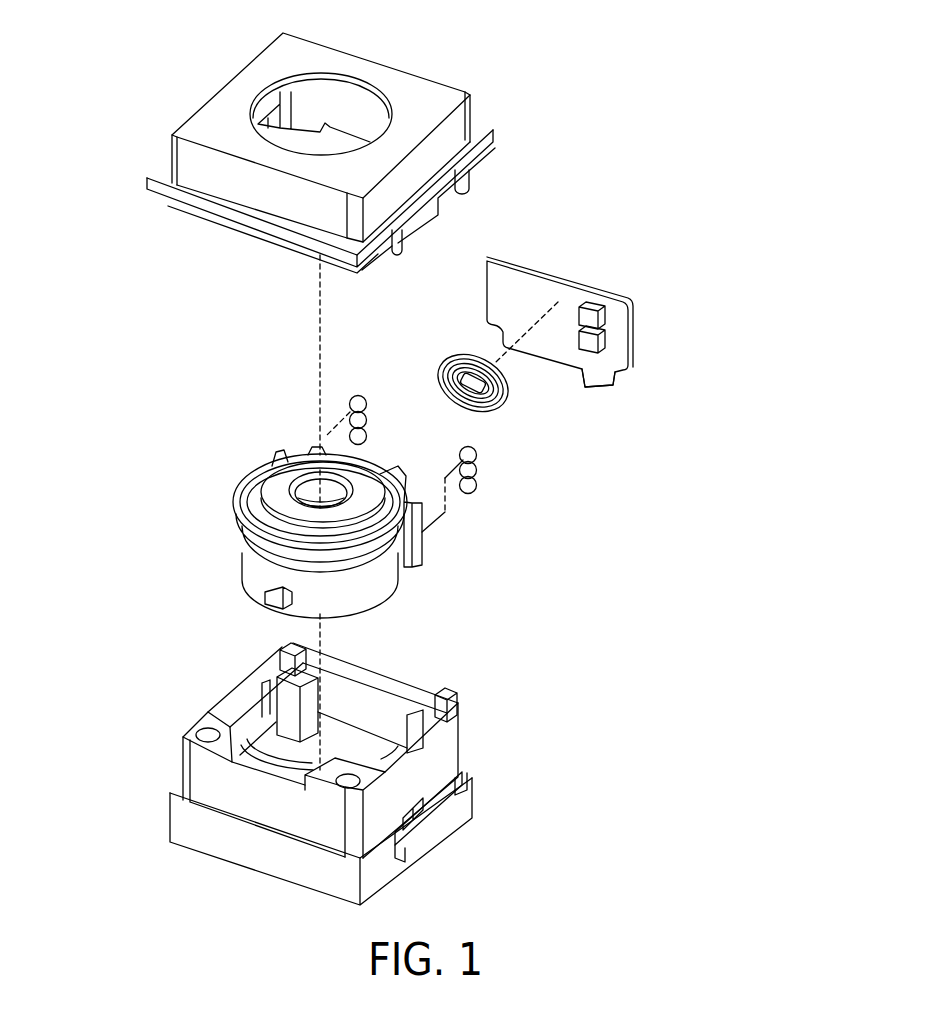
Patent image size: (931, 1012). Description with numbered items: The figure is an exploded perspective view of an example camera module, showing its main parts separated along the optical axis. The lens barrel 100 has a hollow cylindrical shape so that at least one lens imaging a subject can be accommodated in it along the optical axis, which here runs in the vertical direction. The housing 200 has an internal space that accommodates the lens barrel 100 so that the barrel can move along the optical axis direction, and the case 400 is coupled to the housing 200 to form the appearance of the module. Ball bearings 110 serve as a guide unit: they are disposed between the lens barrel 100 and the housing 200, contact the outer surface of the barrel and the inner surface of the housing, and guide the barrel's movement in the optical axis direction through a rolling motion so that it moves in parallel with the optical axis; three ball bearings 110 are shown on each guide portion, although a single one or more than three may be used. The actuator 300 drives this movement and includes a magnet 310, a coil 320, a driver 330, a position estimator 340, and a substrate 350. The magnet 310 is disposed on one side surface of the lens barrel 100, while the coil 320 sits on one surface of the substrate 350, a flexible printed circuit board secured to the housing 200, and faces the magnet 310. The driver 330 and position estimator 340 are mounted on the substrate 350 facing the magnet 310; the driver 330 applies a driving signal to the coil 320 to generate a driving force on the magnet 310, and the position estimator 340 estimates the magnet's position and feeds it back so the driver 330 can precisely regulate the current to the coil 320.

The lens barrel 100 is at (243, 543).
The ball bearing 110 is at (480, 489).
The housing 200 is at (250, 855).
The actuator 300 is at (781, 366).
The magnet 310 is at (408, 472).
The coil 320 is at (505, 387).
The driver 330 is at (604, 330).
The position estimator 340 is at (614, 375).
The substrate 350 is at (584, 375).
The case 400 is at (183, 163).